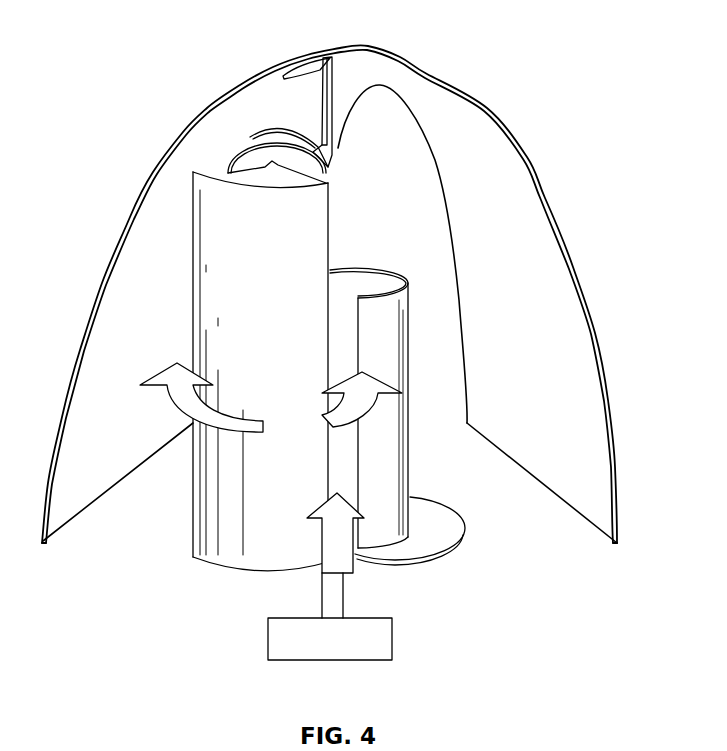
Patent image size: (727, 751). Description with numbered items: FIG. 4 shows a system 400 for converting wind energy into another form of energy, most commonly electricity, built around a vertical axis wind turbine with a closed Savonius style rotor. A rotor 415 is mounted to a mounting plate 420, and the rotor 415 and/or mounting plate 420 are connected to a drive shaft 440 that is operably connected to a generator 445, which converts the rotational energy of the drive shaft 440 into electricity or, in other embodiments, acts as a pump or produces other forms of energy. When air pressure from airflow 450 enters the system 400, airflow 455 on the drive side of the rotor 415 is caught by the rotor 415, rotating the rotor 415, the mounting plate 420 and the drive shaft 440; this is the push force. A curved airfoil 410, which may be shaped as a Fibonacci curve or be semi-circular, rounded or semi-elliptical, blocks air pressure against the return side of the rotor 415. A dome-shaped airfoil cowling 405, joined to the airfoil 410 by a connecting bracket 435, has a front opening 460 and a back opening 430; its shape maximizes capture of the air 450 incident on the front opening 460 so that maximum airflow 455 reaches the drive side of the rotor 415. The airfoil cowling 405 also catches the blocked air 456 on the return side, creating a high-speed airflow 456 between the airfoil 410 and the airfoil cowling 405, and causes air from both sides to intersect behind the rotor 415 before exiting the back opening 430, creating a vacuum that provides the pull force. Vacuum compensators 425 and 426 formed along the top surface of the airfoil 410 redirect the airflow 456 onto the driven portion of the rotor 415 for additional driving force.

The system 400 is at (136, 57).
The airfoil cowling 405 is at (547, 193).
The airfoil 410 is at (230, 553).
The rotor 415 is at (410, 342).
The mounting plate 420 is at (465, 524).
The vacuum compensator 425 is at (250, 136).
The vacuum compensator 426 is at (280, 130).
The back opening 430 is at (353, 191).
The connecting bracket 435 is at (338, 66).
The drive shaft 440 is at (322, 583).
The generator 445 is at (335, 661).
The airflow 450 is at (356, 556).
The airflow 455 is at (321, 413).
The blocked air 456 is at (227, 412).
The front opening 460 is at (142, 546).